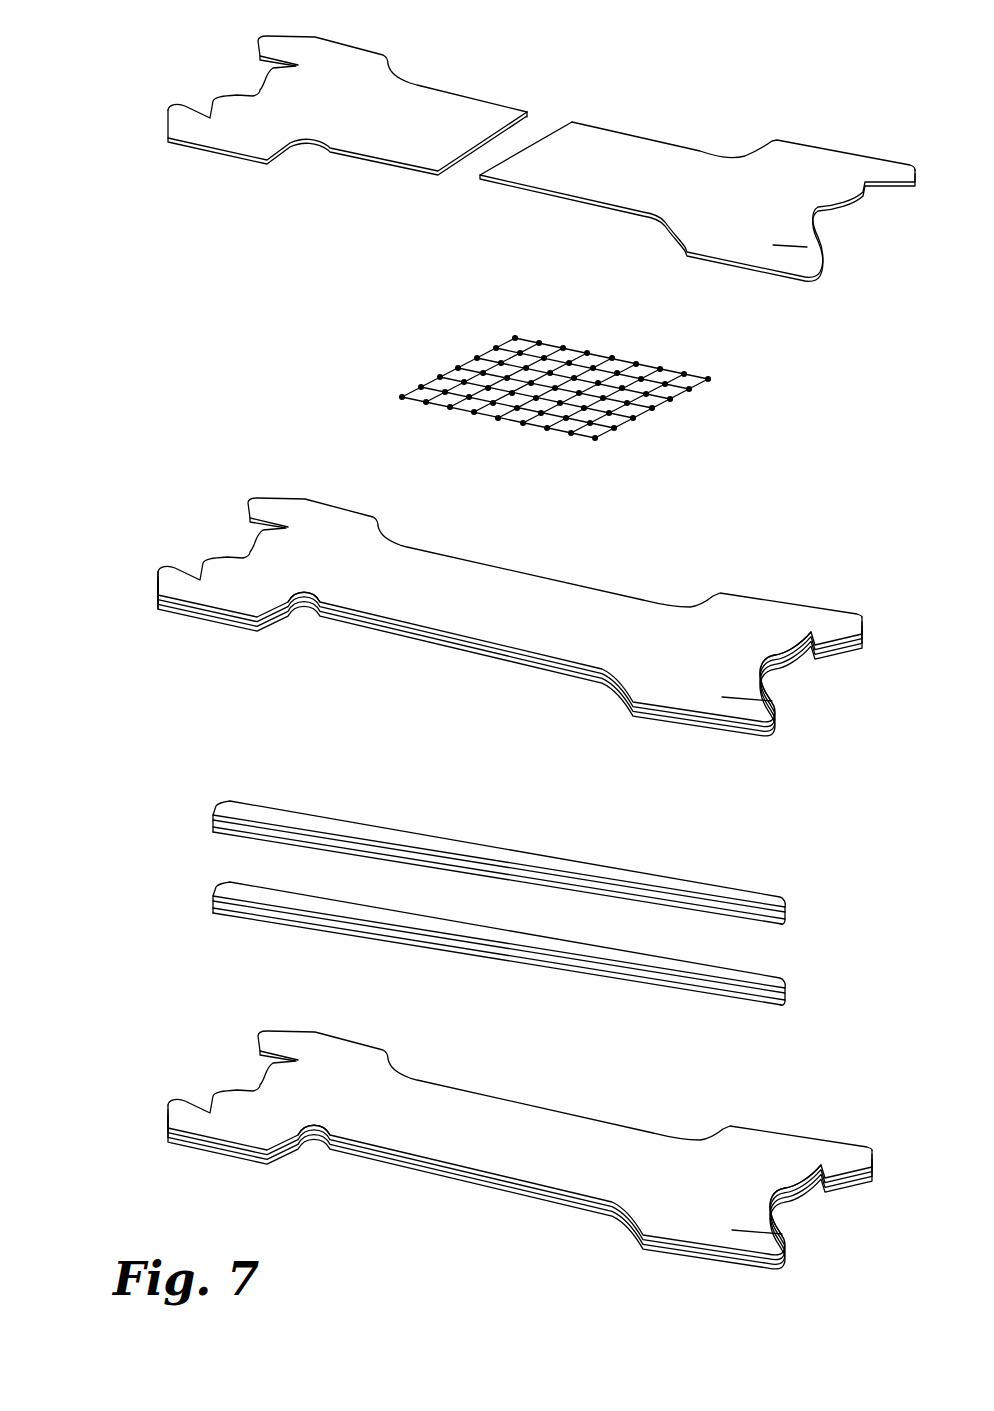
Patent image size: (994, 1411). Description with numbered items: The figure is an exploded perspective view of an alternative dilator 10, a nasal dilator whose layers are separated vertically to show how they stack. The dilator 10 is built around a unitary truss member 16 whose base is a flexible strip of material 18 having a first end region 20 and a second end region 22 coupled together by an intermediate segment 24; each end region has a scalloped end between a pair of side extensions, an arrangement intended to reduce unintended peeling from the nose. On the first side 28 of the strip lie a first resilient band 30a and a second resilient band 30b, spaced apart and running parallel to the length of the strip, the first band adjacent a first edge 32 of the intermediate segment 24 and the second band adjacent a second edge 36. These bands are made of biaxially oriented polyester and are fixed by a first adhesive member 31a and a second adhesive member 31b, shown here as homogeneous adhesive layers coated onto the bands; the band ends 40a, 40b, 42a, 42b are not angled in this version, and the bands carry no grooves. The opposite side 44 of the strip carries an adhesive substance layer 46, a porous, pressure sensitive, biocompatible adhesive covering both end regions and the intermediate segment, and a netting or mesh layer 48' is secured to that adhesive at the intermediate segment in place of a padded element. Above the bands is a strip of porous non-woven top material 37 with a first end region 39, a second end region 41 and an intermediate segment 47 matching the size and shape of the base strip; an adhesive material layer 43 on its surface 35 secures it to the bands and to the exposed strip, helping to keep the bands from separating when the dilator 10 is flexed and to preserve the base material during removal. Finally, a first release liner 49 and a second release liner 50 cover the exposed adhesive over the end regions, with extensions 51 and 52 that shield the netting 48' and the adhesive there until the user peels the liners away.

The dilator 10 is at (140, 270).
The first release liner 49 is at (342, 60).
The second release liner 50 is at (792, 155).
The extension of first release liner 51 is at (470, 107).
The extension of second release liner 52 is at (587, 137).
The netting or mesh layer 48' is at (572, 388).
The first end region 20 is at (252, 525).
The adhesive substance layer 46 is at (337, 527).
The second edge of intermediate segment 36 is at (500, 563).
The first side of strip of material 28 is at (390, 637).
The first edge of intermediate segment 32 is at (462, 645).
The intermediate segment 24 is at (548, 665).
The side of flexible material strip 44 is at (288, 603).
The flexible strip of material 18 is at (177, 612).
The second end region 22 is at (783, 667).
The truss member 16 is at (148, 856).
The first resilient band 30a is at (433, 947).
The second resilient band 30b is at (488, 876).
The first adhesive member 31a is at (492, 927).
The second adhesive member 31b is at (520, 852).
The end of first resilient band 40a is at (212, 900).
The end of second resilient band 40b is at (212, 820).
The end of first resilient band 42a is at (773, 1000).
The end of second resilient band 42b is at (783, 917).
The first end region of top material 39 is at (262, 1060).
The adhesive material layer 43 is at (538, 1118).
The intermediate segment of top material 47 is at (417, 1167).
The top material 37 is at (517, 1192).
The surface of top material 35 is at (296, 1130).
The second end region of top material 41 is at (783, 1197).